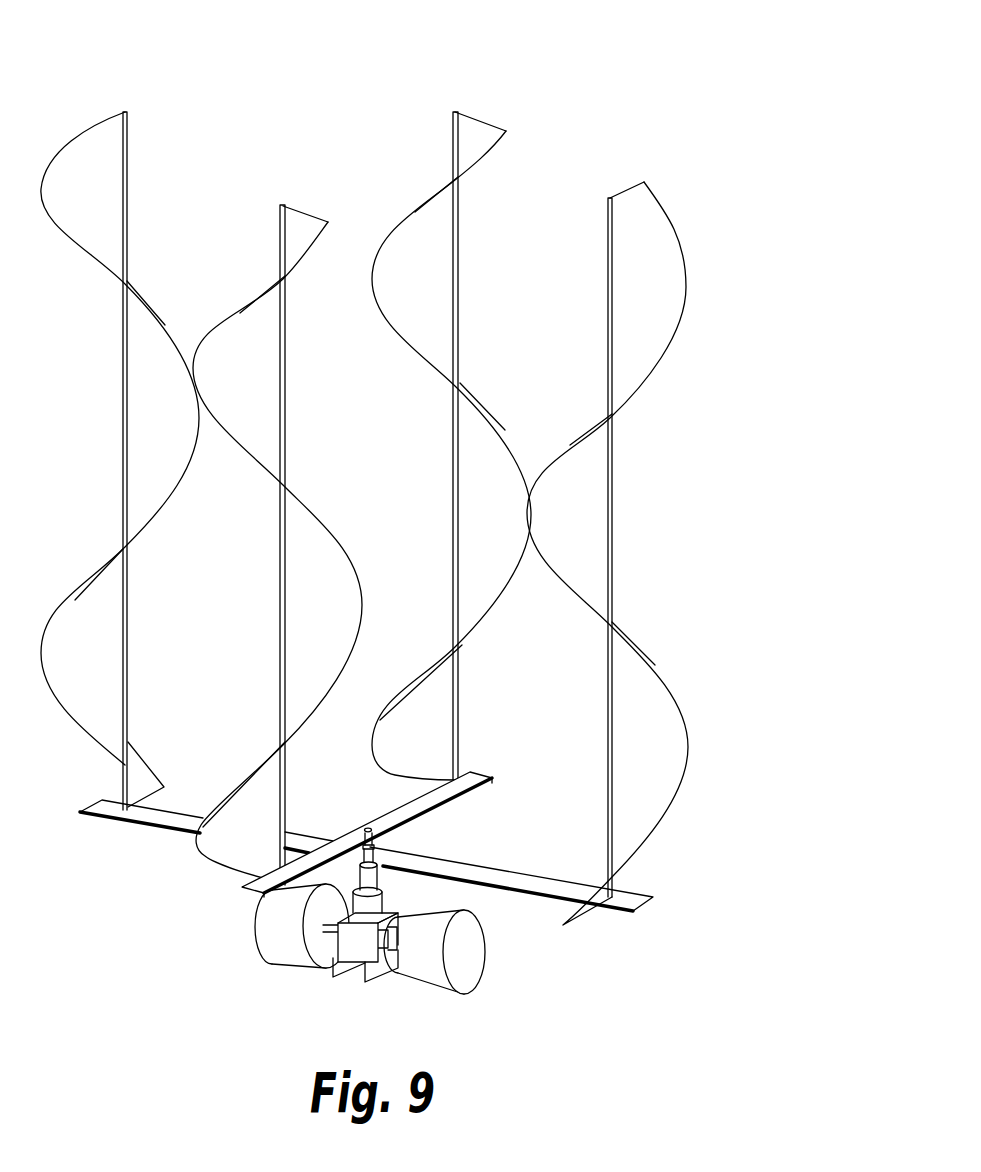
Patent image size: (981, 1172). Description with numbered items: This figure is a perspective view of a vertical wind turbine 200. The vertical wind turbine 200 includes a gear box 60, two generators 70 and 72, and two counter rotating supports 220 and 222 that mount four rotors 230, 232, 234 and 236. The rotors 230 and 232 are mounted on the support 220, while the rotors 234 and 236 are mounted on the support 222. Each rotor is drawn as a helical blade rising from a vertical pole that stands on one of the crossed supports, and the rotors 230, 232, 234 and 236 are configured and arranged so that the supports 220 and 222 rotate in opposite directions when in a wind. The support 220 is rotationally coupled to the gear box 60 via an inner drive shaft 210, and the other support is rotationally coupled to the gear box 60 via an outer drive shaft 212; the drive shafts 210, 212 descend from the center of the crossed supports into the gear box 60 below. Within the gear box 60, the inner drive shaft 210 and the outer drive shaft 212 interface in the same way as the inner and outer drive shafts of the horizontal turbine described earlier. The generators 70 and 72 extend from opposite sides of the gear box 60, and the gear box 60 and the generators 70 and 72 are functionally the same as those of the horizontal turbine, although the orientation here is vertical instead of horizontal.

The vertical wind turbine 200 is at (750, 123).
The rotor 236 is at (92, 128).
The rotor 230 is at (300, 210).
The rotor 232 is at (473, 130).
The rotor 234 is at (640, 212).
The counter rotating support 222 is at (177, 818).
The counter rotating support 220 is at (407, 805).
The inner drive shaft 210 is at (378, 847).
The outer drive shaft 212 is at (378, 887).
The generator 72 is at (268, 935).
The generator 70 is at (470, 957).
The gear box 60 is at (352, 955).